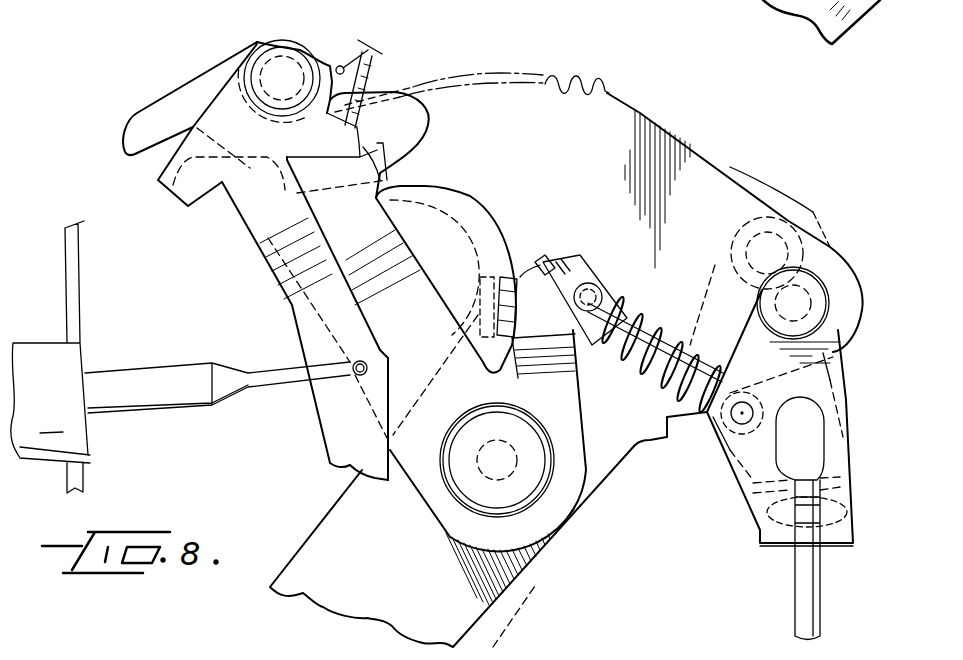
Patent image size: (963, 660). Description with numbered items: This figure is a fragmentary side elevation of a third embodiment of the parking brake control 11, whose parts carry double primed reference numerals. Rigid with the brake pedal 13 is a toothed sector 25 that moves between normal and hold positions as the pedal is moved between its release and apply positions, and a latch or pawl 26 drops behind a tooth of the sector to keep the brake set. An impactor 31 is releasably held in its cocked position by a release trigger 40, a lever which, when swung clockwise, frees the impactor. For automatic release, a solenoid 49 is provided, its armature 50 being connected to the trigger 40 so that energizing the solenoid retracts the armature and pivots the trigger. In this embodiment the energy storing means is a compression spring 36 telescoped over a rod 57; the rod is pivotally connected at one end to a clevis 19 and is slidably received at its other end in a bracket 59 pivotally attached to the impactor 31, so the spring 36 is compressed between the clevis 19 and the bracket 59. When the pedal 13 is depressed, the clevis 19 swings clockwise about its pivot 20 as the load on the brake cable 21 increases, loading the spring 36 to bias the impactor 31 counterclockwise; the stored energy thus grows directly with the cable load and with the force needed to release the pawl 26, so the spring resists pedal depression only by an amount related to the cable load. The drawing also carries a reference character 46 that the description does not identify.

The control 11 is at (142, 84).
The pedal 13 is at (318, 530).
The clevis 19 is at (730, 468).
The pivot 20 is at (807, 310).
The brake cable 21 is at (822, 602).
The toothed sector 25 is at (645, 120).
The pawl 26 is at (433, 113).
The impactor 31 is at (418, 242).
The compression spring 36 is at (660, 335).
The release trigger 40 is at (318, 420).
The stop 46 is at (500, 298).
The solenoid 49 is at (70, 355).
The armature 50 is at (195, 365).
The rod 57 is at (663, 373).
The bracket 59 is at (623, 292).